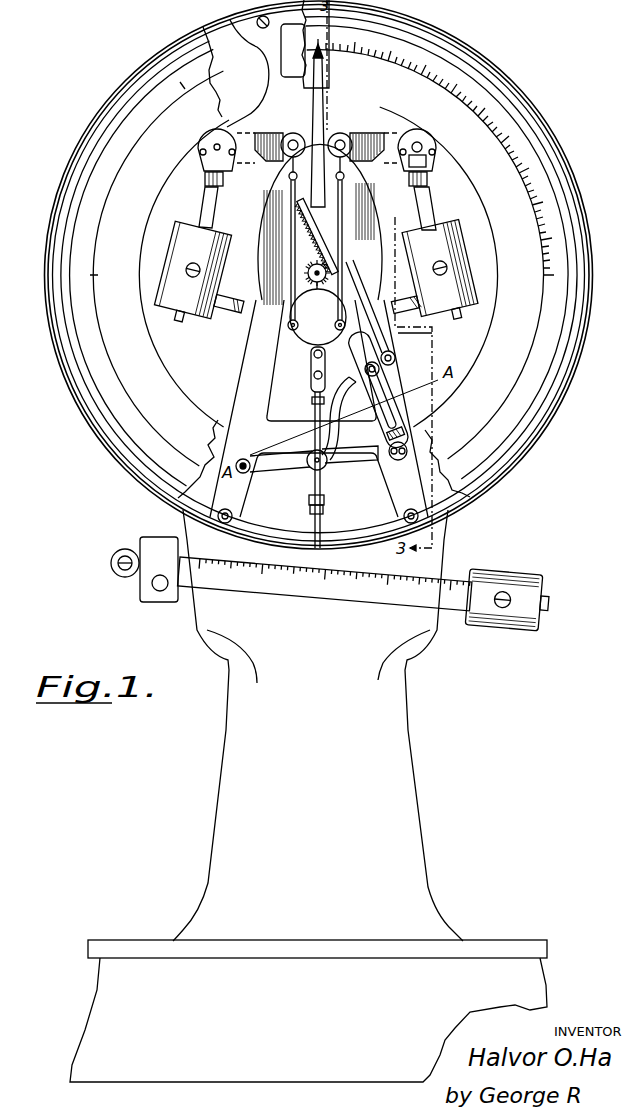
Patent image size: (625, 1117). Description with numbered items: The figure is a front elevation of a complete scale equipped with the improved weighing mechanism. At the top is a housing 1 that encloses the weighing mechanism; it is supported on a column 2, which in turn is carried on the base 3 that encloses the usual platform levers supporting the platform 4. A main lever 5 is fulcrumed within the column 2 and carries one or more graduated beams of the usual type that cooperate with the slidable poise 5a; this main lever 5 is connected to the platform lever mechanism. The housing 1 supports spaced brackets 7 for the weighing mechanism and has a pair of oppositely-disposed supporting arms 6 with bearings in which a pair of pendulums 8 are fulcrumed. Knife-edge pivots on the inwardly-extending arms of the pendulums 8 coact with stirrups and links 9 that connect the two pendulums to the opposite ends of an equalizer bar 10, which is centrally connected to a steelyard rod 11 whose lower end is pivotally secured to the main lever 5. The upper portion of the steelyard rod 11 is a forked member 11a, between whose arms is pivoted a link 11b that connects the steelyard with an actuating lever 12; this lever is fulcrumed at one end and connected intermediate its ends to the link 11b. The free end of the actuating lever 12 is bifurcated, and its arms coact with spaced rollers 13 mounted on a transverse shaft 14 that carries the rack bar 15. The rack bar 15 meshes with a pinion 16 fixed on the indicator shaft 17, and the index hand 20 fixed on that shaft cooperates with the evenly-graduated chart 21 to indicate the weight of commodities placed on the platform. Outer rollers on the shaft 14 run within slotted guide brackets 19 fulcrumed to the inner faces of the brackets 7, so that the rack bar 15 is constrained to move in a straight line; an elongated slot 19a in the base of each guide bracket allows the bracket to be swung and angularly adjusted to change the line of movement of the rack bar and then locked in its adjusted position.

The housing 1 is at (592, 264).
The column 2 is at (405, 733).
The base 3 is at (530, 975).
The platform 4 is at (510, 940).
The main lever 5 is at (363, 587).
The slidable poise 5a is at (152, 600).
The supporting arms 6 is at (214, 130).
The brackets 7 is at (268, 73).
The pendulums 8 is at (205, 183).
The stirrups and links 9 is at (286, 199).
The equalizer bar 10 is at (302, 369).
The steelyard rod 11 is at (327, 515).
The forked member 11a is at (314, 414).
The link 11b is at (312, 468).
The actuating lever 12 is at (342, 427).
The rollers 13 is at (381, 372).
The transverse shaft 14 is at (392, 356).
The rack bar 15 is at (319, 328).
The pinion 16 is at (318, 313).
The indicator shaft 17 is at (324, 272).
The slotted guide brackets 19 is at (400, 404).
The elongated slot 19a is at (408, 456).
The index hand 20 is at (325, 88).
The evenly-graduated chart 21 is at (523, 156).